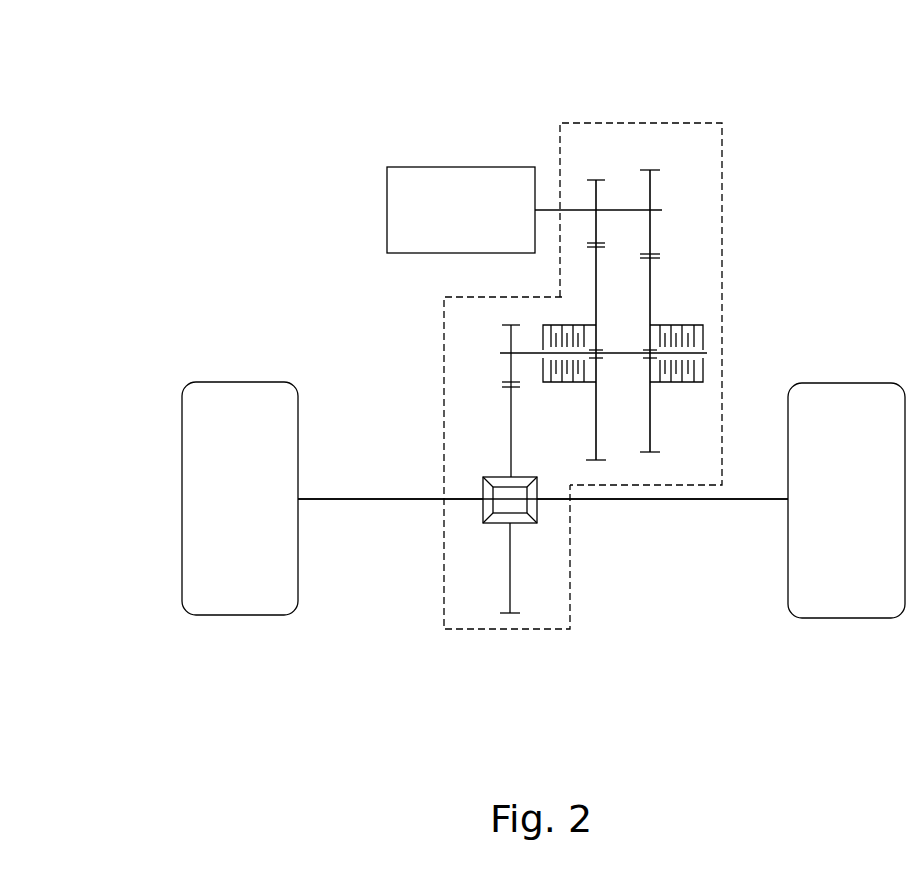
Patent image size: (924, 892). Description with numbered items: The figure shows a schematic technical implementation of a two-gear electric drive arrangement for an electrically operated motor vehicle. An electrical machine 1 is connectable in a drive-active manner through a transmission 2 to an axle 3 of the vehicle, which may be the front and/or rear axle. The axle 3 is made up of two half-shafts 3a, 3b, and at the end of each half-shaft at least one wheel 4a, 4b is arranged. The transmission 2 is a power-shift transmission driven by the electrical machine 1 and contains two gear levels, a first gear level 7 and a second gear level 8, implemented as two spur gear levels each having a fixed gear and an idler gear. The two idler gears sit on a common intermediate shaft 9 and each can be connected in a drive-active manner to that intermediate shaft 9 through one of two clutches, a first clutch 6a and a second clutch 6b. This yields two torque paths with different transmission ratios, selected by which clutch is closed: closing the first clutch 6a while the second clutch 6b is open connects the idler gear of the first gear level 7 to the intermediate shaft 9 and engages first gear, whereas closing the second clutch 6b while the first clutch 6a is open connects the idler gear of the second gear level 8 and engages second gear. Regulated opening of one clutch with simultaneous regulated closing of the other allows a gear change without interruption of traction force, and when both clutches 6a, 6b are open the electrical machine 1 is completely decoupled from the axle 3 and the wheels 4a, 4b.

The electrical machine 1 is at (477, 225).
The transmission 2 is at (722, 190).
The axle 3 is at (160, 493).
The half-shaft 3a is at (375, 498).
The half-shaft 3b is at (683, 499).
The wheel 4a is at (230, 558).
The wheel 4b is at (840, 567).
The first clutch 6a is at (535, 321).
The second clutch 6b is at (690, 315).
The first gear level 7 is at (597, 162).
The second gear level 8 is at (652, 155).
The intermediate shaft 9 is at (618, 355).